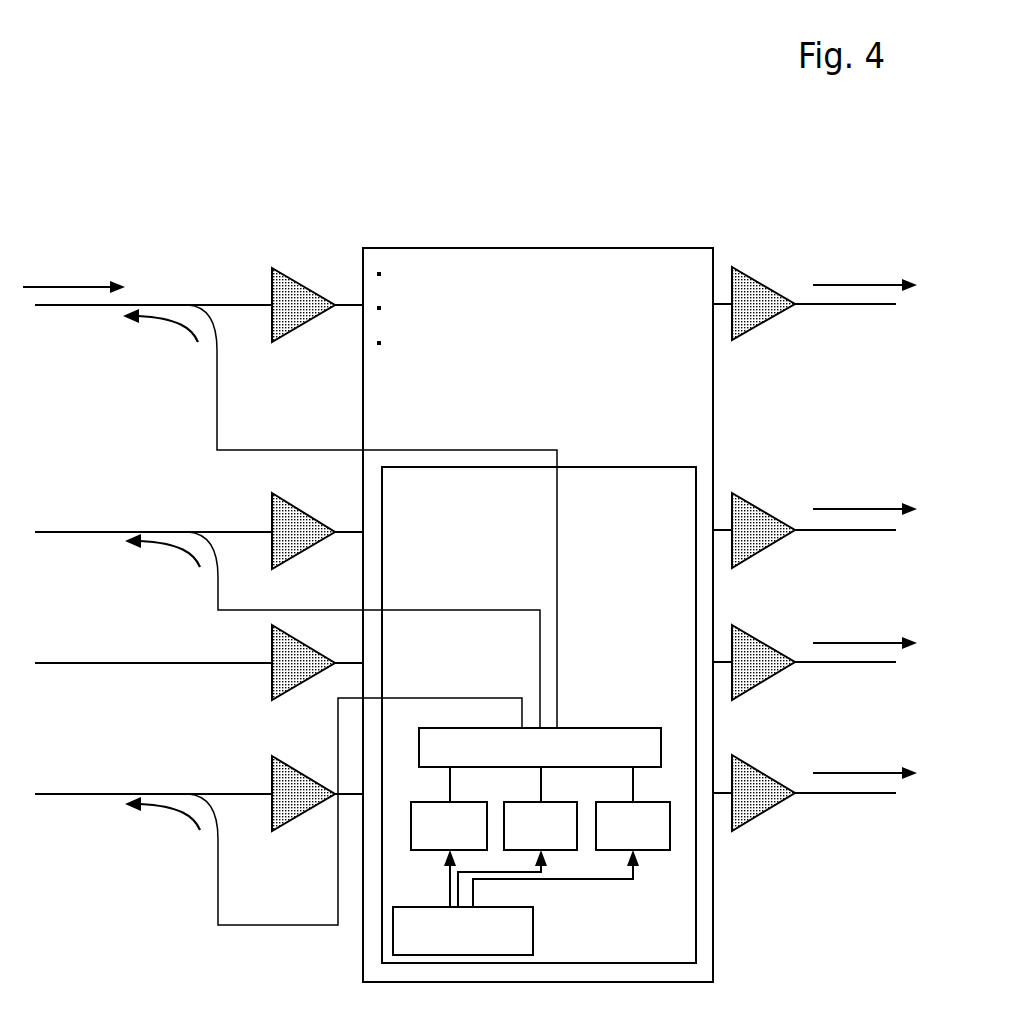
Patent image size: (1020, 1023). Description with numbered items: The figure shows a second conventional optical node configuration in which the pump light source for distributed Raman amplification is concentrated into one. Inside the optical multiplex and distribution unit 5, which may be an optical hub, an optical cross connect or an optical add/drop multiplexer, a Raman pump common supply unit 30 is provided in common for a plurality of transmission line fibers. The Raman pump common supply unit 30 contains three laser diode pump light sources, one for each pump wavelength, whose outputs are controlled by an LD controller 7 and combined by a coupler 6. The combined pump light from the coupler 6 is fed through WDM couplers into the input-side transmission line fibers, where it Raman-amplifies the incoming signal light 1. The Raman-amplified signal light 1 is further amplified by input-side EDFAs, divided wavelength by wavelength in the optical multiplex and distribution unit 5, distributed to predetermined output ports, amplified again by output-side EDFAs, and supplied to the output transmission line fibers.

The signal light 1 is at (470, 516).
The optical multiplex & distribution unit 5 is at (497, 244).
The coupler 6 is at (540, 752).
The LD controller 7 is at (474, 926).
The Raman pump common supply unit 30 is at (537, 690).